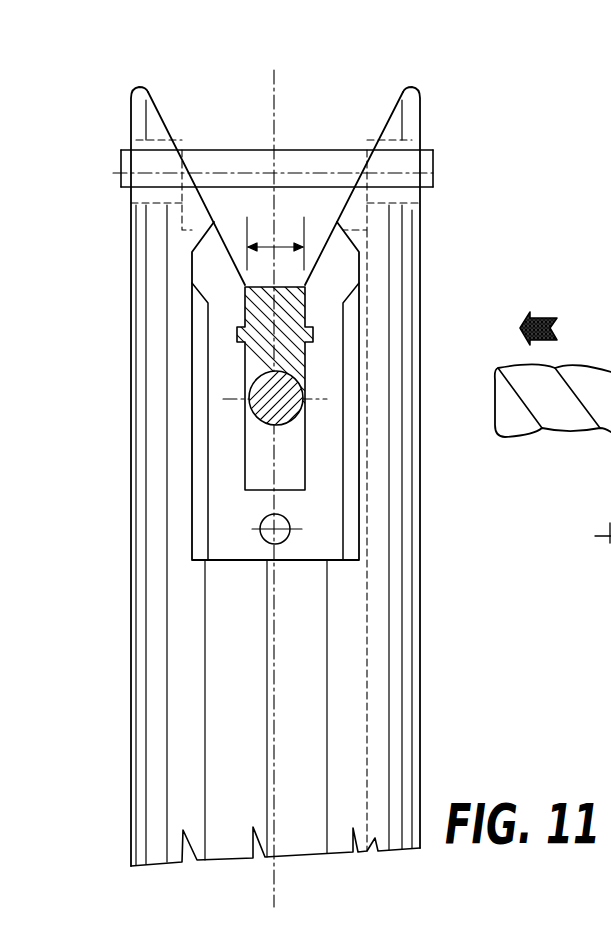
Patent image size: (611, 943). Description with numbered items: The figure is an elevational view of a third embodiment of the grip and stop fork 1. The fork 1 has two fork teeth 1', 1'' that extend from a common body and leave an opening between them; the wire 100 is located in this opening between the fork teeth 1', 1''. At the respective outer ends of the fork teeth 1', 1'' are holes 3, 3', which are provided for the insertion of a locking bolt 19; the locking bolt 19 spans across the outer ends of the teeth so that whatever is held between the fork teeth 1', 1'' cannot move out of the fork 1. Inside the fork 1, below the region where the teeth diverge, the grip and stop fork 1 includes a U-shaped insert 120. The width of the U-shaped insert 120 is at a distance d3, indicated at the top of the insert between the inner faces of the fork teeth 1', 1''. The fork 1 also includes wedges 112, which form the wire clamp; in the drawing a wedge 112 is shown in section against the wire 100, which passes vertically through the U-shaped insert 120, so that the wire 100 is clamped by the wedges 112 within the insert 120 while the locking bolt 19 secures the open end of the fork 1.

The grip and stop fork 1 is at (242, 476).
The fork tooth 1' is at (153, 186).
The fork tooth 1'' is at (404, 186).
The hole 3 is at (110, 166).
The hole 3' is at (448, 162).
The locking bolt 19 is at (308, 175).
The U-shaped insert 120 is at (203, 333).
The wedges 112 is at (246, 392).
The wire 100 is at (250, 413).
The width of U-shaped insert d3 is at (275, 242).